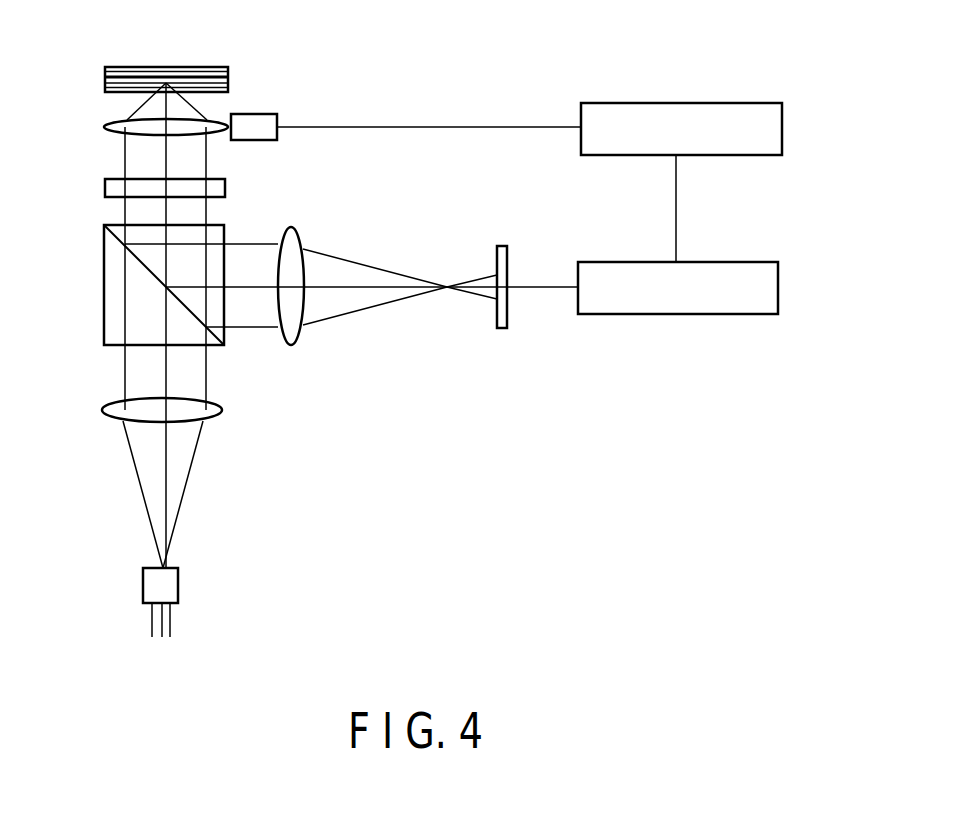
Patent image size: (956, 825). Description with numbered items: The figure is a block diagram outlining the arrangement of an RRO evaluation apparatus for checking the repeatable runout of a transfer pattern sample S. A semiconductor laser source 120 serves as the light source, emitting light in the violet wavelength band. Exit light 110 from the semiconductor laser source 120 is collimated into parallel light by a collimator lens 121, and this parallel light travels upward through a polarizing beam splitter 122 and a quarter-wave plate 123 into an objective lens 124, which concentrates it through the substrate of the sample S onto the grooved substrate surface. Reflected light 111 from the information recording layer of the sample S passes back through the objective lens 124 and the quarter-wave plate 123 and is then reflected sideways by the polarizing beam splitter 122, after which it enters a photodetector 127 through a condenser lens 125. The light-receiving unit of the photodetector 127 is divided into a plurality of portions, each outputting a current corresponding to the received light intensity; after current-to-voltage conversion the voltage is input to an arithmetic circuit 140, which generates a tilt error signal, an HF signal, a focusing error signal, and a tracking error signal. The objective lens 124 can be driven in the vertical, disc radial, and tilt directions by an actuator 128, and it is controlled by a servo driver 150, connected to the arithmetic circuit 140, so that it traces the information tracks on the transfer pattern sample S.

The transfer pattern sample S is at (191, 67).
The exit light 110 is at (140, 500).
The reflected light 111 is at (258, 329).
The semiconductor laser source 120 is at (143, 589).
The collimator lens 121 is at (103, 410).
The polarizing beam splitter 122 is at (104, 282).
The λ/4 plate 123 is at (105, 188).
The objective lens 124 is at (104, 127).
The condenser lens 125 is at (288, 227).
The photodetector 127 is at (500, 246).
The actuator 128 is at (263, 112).
The arithmetic circuit 140 is at (779, 290).
The servo driver 150 is at (783, 128).